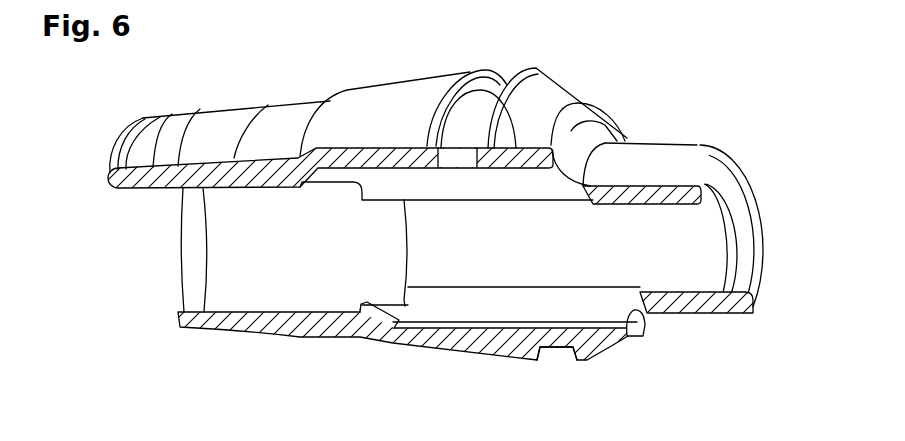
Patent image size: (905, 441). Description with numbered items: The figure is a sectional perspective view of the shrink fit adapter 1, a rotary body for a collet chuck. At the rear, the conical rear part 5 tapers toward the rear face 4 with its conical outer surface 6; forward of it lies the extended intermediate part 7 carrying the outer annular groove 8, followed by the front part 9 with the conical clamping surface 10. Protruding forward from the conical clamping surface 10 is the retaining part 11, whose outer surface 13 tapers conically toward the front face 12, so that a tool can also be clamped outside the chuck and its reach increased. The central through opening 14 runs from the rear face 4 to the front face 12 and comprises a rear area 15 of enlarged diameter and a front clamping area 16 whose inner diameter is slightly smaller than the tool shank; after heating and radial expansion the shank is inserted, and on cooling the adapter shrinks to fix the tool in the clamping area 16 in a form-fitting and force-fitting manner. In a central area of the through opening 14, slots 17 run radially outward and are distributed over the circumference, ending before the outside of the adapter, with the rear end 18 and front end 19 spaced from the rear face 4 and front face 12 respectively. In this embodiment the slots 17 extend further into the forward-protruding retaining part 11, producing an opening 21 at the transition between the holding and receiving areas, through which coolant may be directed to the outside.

The shrink fit adapter 1 is at (728, 88).
The rear face 4 is at (108, 184).
The conical rear part 5 is at (303, 325).
The conical outer surface 6 is at (224, 132).
The intermediate part 7 is at (560, 347).
The outer annular groove 8 is at (463, 123).
The front part 9 is at (607, 352).
The conical clamping surface 10 is at (537, 97).
The retaining part 11 is at (693, 314).
The front face 12 is at (743, 160).
The outer surface 13 is at (655, 163).
The central through opening 14 is at (717, 253).
The rear area 15 is at (248, 275).
The front clamping area 16 is at (485, 272).
The slots 17 is at (405, 195).
The rear end 18 is at (362, 307).
The front end 19 is at (597, 197).
The opening 21 is at (573, 147).